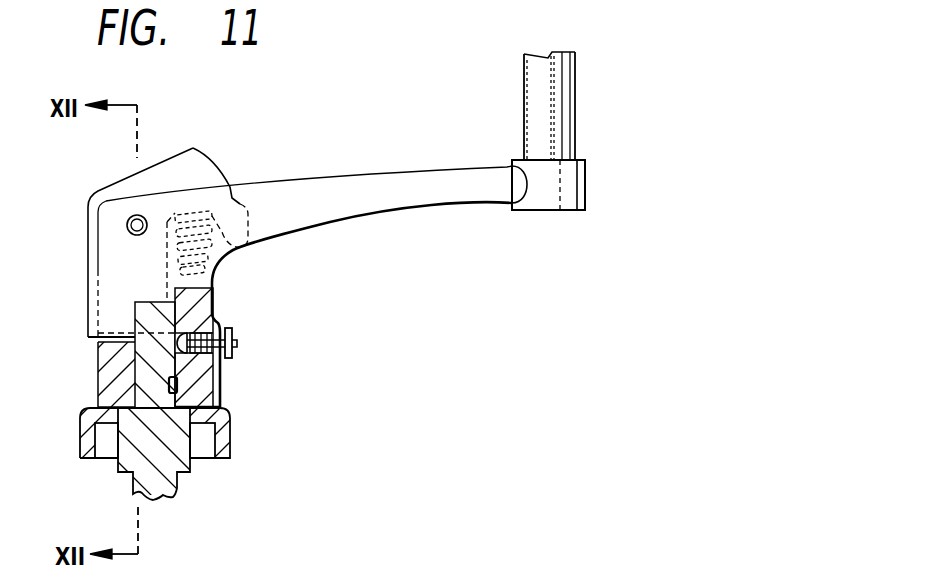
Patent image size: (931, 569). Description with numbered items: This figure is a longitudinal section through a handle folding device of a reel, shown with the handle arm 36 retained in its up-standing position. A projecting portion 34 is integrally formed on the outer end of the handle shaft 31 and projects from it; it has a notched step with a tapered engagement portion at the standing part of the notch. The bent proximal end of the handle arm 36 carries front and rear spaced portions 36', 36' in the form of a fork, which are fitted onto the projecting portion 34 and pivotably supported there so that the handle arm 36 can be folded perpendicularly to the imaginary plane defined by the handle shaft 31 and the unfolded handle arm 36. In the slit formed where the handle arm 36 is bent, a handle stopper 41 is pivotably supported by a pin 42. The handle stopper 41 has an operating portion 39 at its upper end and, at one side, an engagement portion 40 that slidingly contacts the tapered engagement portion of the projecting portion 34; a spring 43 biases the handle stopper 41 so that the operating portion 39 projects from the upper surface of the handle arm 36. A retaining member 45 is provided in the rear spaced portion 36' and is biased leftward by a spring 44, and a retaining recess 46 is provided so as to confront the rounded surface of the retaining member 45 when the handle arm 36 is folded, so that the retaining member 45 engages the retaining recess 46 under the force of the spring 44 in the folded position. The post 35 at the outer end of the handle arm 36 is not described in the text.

The handle shaft 31 is at (173, 490).
The projecting portion 34 is at (147, 372).
The post 35 is at (567, 122).
The handle arm 36 is at (309, 209).
The spaced portions 36' is at (165, 440).
The operating portion 39 is at (202, 162).
The engagement portion 40 is at (133, 308).
The handle stopper 41 is at (92, 230).
The pin 42 is at (134, 215).
The spring 43 is at (228, 257).
The spring 44 is at (215, 314).
The retaining member 45 is at (238, 343).
The retaining recess 46 is at (214, 375).